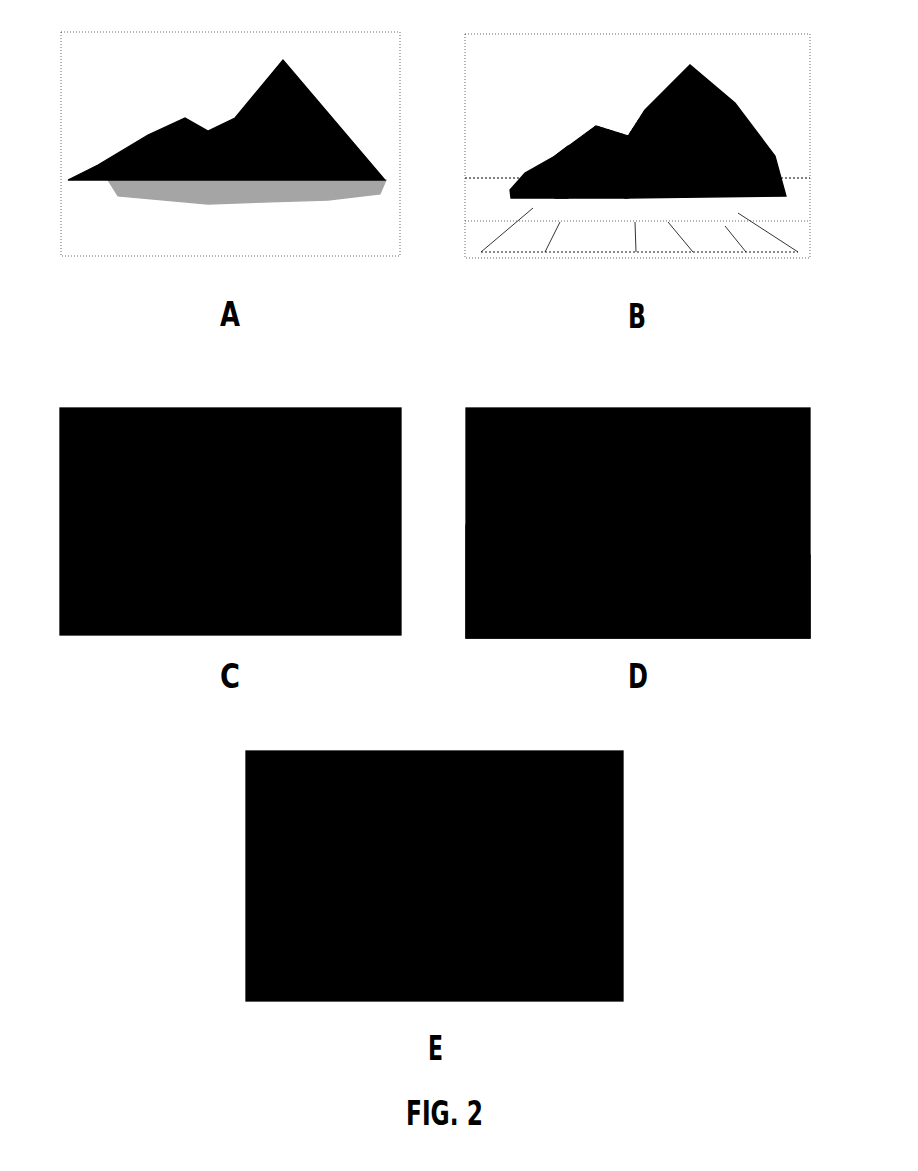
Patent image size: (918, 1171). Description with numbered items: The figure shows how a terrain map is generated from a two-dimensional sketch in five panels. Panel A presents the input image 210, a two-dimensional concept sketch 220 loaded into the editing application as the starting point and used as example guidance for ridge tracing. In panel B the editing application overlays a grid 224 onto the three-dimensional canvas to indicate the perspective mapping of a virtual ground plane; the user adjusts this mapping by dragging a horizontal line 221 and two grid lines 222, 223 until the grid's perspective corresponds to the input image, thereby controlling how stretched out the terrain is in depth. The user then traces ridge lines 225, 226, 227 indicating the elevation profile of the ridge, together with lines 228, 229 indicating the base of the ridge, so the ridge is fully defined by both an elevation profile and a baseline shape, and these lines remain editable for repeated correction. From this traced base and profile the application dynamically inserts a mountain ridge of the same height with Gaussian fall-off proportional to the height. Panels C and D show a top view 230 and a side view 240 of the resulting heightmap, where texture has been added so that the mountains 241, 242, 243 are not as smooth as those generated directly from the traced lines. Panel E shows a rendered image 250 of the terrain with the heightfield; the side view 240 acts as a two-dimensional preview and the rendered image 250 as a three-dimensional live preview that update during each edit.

The input image 210 is at (317, 38).
The 2D concept sketch 220 is at (643, 155).
The horizontal line 221 is at (662, 248).
The grid line 222 is at (503, 215).
The grid line 223 is at (762, 222).
The grid 224 is at (593, 228).
The ridge line 225 is at (682, 55).
The ridge line 226 is at (558, 130).
The ridge line 227 is at (545, 143).
The base line 228 is at (500, 168).
The base line 229 is at (773, 170).
The top view 230 is at (298, 400).
The side view 240 is at (617, 505).
The mountain 241 is at (568, 463).
The mountain 242 is at (673, 463).
The mountain 243 is at (458, 549).
The rendered image 250 is at (422, 745).